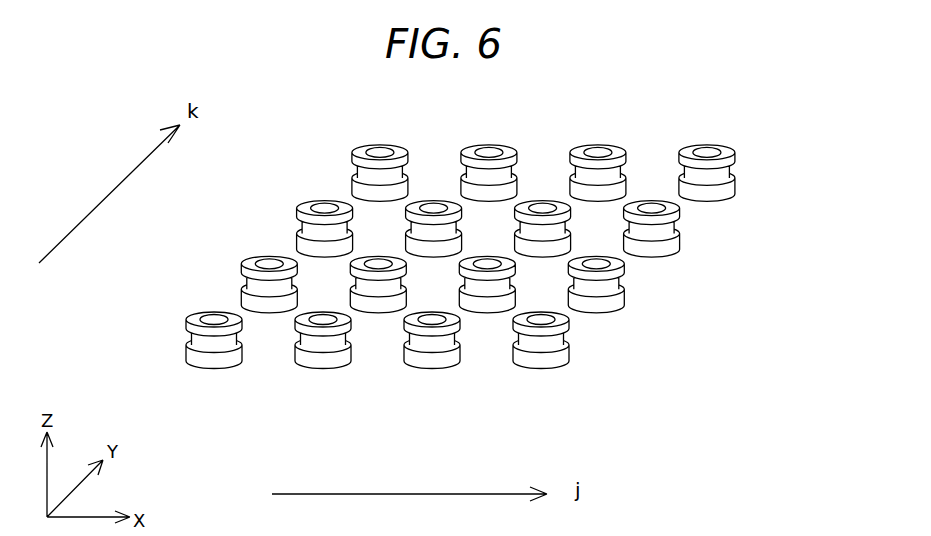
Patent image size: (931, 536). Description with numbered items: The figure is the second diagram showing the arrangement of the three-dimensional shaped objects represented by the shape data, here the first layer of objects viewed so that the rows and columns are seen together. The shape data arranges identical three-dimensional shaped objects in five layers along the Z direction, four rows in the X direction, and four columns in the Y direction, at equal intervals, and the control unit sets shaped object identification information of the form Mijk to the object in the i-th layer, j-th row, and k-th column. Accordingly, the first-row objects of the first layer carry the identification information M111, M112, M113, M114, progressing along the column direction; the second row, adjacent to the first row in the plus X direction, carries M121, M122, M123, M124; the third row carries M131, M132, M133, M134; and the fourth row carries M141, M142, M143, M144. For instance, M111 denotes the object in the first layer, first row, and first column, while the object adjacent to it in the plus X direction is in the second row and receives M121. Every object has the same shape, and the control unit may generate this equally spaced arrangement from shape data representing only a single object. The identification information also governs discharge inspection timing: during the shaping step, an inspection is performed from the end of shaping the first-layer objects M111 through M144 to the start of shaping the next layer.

The shaped object identification information M111 is at (193, 313).
The shaped object identification information M112 is at (250, 260).
The shaped object identification information M113 is at (297, 205).
The shaped object identification information M114 is at (355, 150).
The shaped object identification information M121 is at (320, 370).
The shaped object identification information M122 is at (380, 315).
The shaped object identification information M123 is at (433, 205).
The shaped object identification information M124 is at (489, 145).
The shaped object identification information M131 is at (434, 369).
The shaped object identification information M132 is at (488, 315).
The shaped object identification information M133 is at (538, 204).
The shaped object identification information M134 is at (600, 148).
The shaped object identification information M141 is at (557, 370).
The shaped object identification information M142 is at (610, 313).
The shaped object identification information M143 is at (665, 258).
The shaped object identification information M144 is at (717, 200).